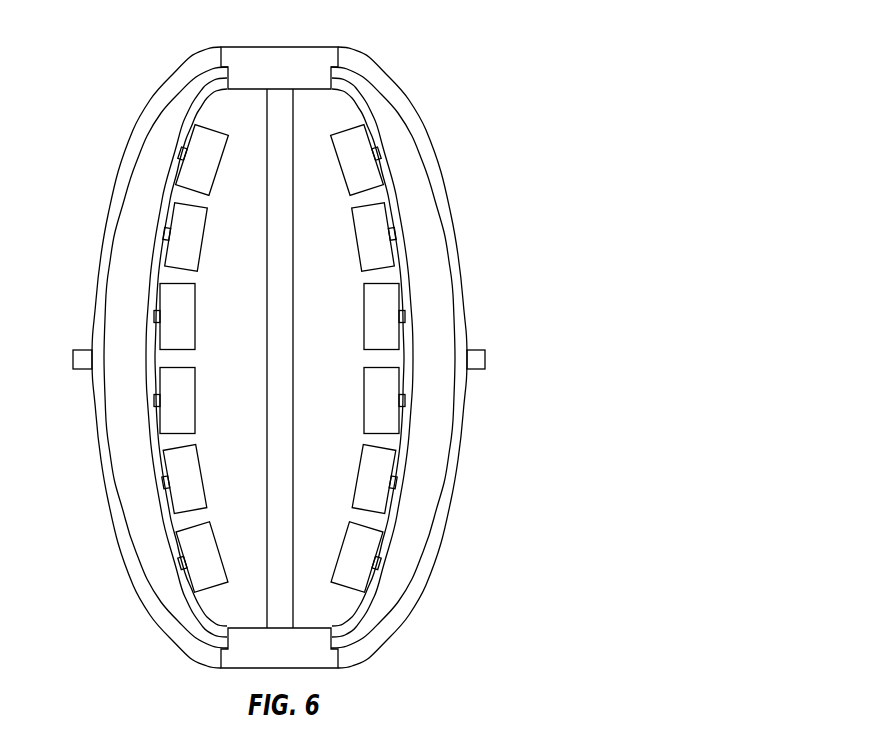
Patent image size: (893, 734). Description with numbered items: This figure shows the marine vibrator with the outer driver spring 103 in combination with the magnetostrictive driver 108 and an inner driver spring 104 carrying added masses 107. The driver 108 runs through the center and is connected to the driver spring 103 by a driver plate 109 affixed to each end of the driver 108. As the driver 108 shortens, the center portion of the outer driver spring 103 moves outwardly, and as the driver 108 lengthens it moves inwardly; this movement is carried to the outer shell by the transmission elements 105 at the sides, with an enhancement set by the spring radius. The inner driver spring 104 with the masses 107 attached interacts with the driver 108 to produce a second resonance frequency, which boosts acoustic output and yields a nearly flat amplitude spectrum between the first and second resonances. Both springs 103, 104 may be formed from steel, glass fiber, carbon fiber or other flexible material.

The outer driver spring 103 is at (442, 175).
The inner driver spring 104 is at (405, 273).
The transmission element 105 is at (478, 360).
The mass 107 is at (380, 480).
The magnetostrictive driver 108 is at (293, 348).
The driver plate 109 is at (300, 89).